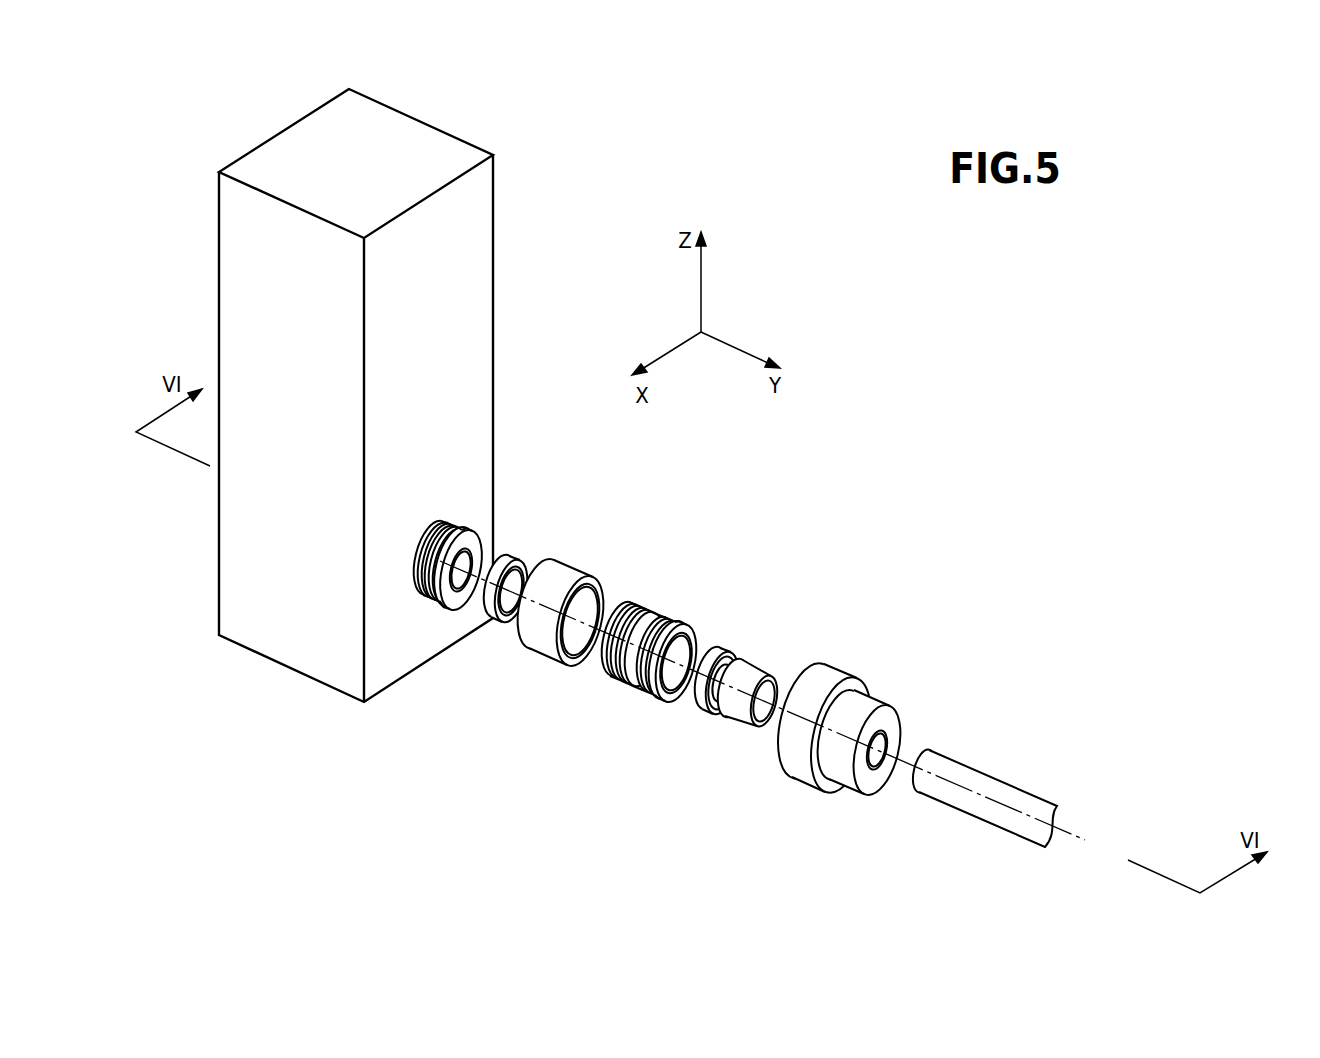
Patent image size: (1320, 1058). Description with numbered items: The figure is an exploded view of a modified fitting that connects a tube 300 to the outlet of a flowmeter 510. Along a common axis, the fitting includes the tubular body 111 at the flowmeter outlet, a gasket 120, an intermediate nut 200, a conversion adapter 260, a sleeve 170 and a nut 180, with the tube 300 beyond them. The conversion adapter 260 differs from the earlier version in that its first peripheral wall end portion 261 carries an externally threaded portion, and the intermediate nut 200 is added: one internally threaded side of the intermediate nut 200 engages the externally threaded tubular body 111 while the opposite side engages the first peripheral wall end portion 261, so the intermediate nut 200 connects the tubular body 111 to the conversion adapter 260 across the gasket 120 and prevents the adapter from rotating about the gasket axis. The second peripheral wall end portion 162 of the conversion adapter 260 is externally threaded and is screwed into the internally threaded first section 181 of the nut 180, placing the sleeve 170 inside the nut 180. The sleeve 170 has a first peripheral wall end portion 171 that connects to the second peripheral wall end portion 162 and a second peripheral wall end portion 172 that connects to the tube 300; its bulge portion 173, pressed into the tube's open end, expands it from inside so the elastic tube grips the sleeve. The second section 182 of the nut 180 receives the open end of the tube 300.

The flowmeter 510 is at (380, 143).
The tubular body 111 is at (467, 532).
The gasket 120 is at (512, 562).
The intermediate nut 200 is at (577, 566).
The conversion adapter 260 is at (659, 628).
The first peripheral wall end portion 261 is at (644, 700).
The second peripheral wall end portion 162 is at (665, 710).
The sleeve 170 is at (748, 657).
The first peripheral wall end portion 171 is at (714, 727).
The second peripheral wall end portion 172 is at (769, 691).
The bulge portion 173 is at (766, 684).
The nut 180 is at (837, 716).
The first section 181 is at (831, 794).
The second section 182 is at (874, 812).
The tube 300 is at (975, 783).